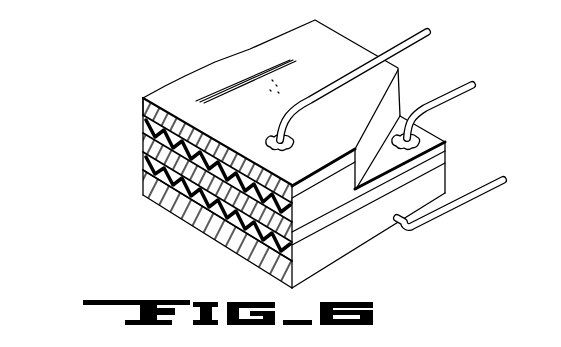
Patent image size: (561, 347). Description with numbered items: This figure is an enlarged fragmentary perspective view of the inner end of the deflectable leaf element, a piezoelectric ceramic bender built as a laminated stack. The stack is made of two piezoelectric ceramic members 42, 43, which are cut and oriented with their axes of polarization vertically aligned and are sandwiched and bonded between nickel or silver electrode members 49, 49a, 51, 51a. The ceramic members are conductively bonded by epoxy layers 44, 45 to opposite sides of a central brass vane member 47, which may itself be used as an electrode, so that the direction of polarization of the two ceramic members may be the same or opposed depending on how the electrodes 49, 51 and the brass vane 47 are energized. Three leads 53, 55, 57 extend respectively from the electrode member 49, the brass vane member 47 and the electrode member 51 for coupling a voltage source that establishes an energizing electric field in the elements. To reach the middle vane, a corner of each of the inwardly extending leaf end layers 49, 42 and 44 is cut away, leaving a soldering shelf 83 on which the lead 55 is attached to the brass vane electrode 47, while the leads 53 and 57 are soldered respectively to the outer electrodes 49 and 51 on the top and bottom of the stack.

The piezoelectric ceramic member 42 is at (143, 113).
The piezoelectric ceramic member 43 is at (143, 183).
The epoxy layer 44 is at (143, 134).
The epoxy layer 45 is at (143, 162).
The brass vane member 47 is at (143, 148).
The electrode member 49 is at (143, 100).
The electrode member 49a is at (143, 115).
The electrode member 51 is at (143, 195).
The electrode member 51a is at (143, 172).
The lead 53 is at (393, 48).
The lead 55 is at (458, 91).
The lead 57 is at (487, 192).
The soldering shelf 83 is at (430, 137).